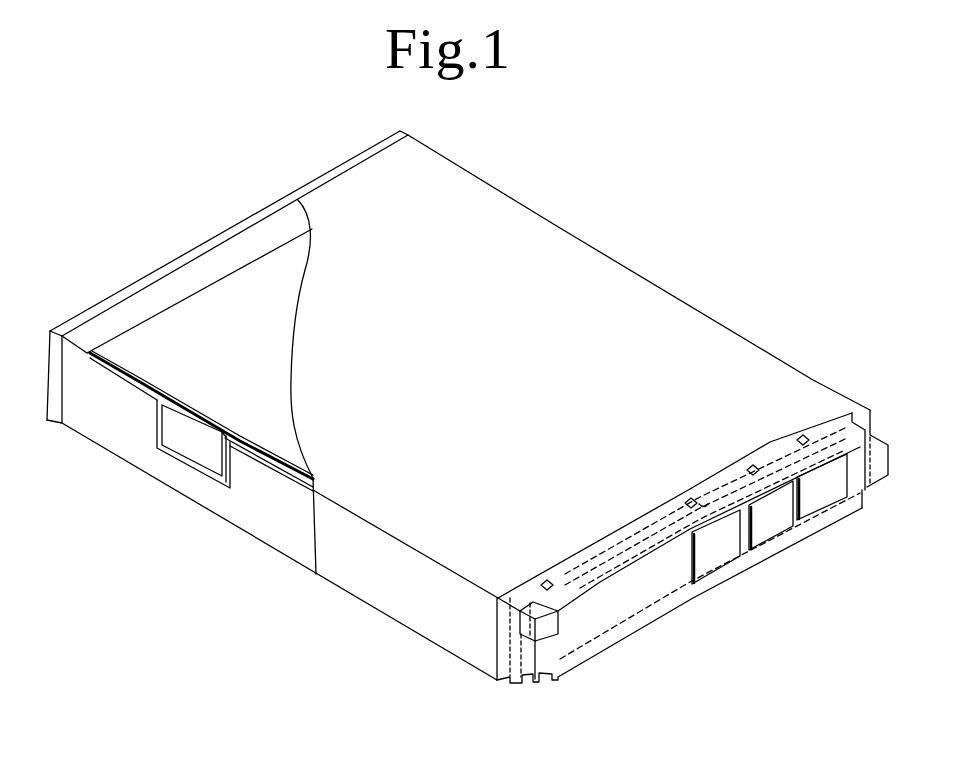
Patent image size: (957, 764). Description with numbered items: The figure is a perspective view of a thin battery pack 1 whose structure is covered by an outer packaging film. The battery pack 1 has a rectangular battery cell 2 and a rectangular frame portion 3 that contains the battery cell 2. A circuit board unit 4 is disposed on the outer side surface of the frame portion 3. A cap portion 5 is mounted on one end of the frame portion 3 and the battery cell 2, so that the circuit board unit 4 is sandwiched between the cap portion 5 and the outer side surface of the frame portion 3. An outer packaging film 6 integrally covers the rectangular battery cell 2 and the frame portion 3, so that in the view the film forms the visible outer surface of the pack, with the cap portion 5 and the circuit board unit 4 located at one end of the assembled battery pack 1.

The battery pack 1 is at (215, 228).
The battery cell 2 is at (222, 305).
The frame portion 3 is at (105, 302).
The circuit board unit 4 is at (648, 612).
The cap portion 5 is at (857, 412).
The outer packaging film 6 is at (748, 365).